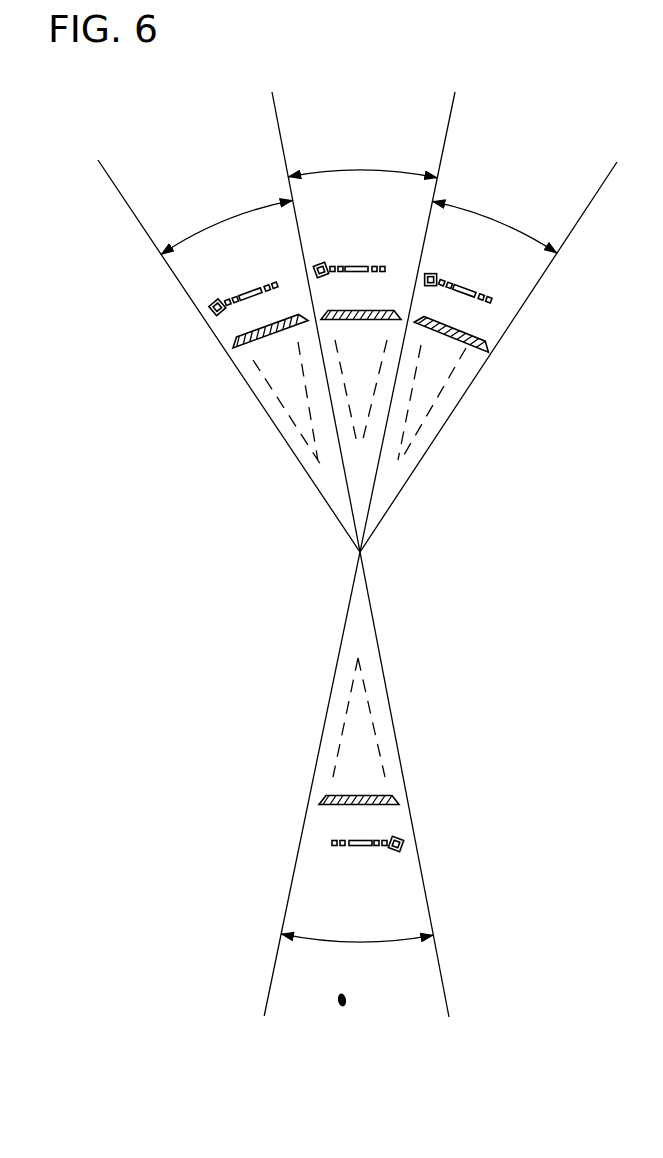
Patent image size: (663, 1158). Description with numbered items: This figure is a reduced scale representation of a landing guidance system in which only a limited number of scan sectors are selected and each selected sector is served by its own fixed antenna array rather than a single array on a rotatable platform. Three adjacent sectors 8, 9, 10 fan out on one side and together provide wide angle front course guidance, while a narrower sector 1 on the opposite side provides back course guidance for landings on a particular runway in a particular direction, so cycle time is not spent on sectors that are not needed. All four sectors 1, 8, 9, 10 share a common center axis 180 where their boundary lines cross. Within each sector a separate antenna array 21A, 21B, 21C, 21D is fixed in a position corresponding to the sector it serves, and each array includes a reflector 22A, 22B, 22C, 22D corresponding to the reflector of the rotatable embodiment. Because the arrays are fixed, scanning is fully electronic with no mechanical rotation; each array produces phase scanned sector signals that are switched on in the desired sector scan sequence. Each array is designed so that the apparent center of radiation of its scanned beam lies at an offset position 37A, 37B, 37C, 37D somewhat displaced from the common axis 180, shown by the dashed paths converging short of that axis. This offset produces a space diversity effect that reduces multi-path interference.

The sector 1 is at (360, 943).
The sector 8 is at (229, 219).
The sector 9 is at (367, 170).
The sector 10 is at (505, 225).
The antenna array 21A is at (257, 262).
The antenna array 21B is at (384, 245).
The antenna array 21C is at (492, 281).
The antenna array 21D is at (341, 872).
The reflector 22A is at (258, 333).
The reflector 22B is at (374, 313).
The reflector 22C is at (458, 335).
The reflector 22D is at (343, 804).
The offset position 37A is at (322, 465).
The offset position 37B is at (358, 447).
The offset position 37C is at (397, 465).
The offset position 37D is at (360, 658).
The common center axis 180 is at (371, 556).